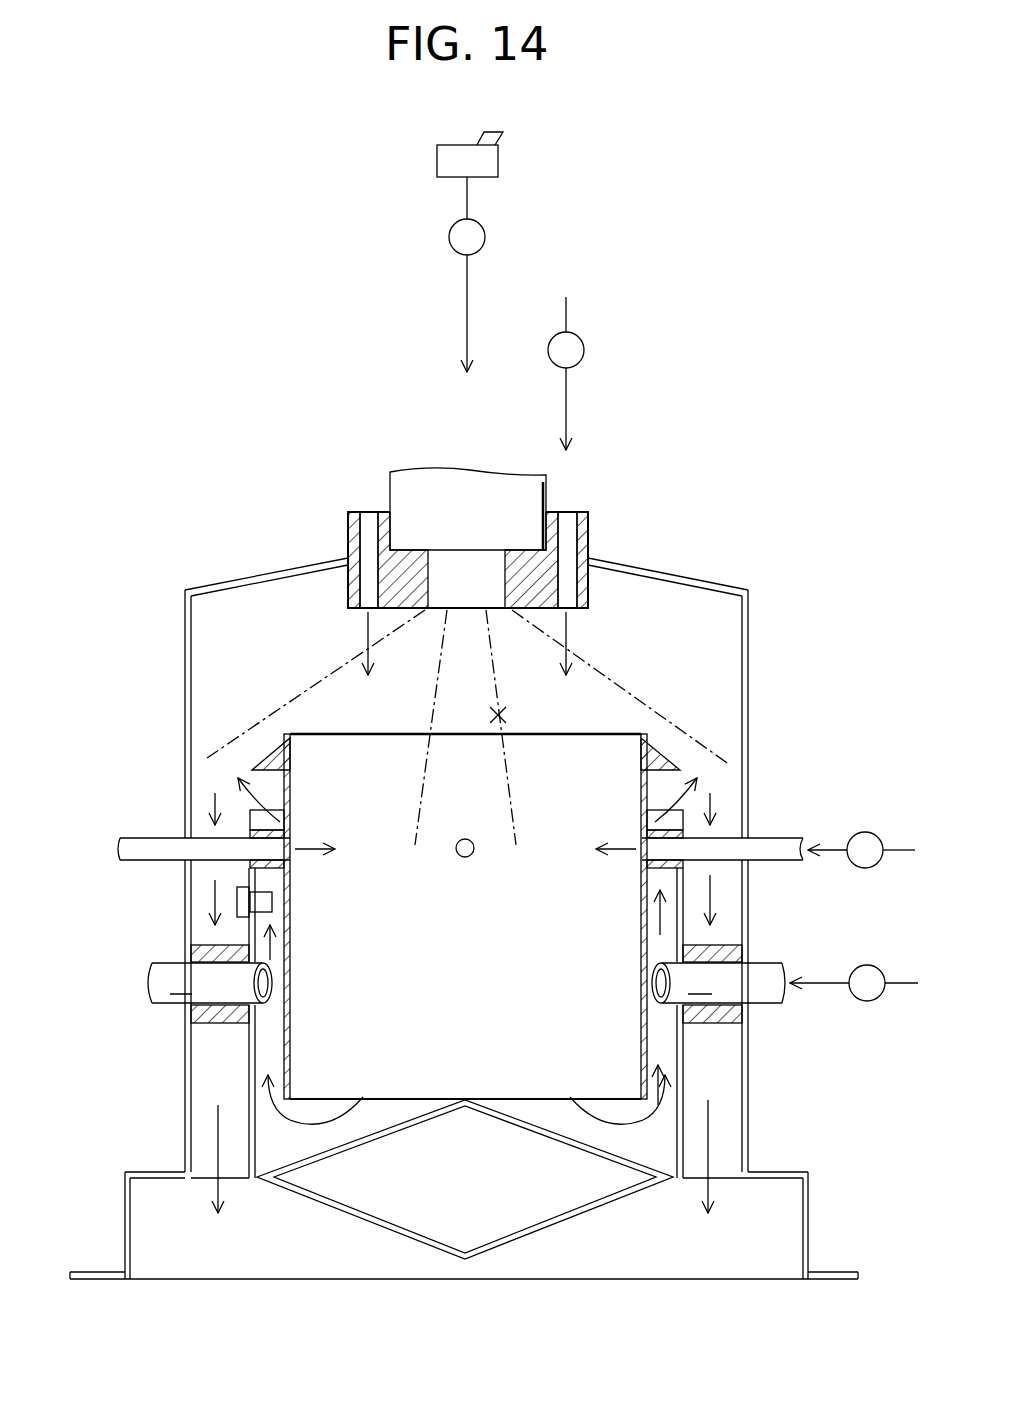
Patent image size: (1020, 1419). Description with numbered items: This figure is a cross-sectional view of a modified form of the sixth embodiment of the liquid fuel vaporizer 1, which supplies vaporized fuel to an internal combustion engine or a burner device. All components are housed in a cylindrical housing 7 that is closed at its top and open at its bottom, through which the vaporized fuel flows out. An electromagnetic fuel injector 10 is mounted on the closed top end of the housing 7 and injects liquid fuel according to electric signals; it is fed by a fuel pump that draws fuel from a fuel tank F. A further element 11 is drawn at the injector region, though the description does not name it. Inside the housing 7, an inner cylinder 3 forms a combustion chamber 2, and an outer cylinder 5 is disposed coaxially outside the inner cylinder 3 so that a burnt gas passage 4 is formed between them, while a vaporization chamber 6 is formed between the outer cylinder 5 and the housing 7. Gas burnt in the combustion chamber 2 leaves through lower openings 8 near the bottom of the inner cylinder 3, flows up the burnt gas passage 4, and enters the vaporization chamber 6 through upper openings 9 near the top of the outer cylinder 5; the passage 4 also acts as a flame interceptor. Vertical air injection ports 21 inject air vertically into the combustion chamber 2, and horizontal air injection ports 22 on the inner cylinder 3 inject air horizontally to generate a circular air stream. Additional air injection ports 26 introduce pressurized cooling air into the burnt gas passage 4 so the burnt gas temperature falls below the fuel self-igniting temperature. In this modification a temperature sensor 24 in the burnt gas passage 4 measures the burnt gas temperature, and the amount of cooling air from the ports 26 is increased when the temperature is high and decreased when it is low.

The liquid fuel vaporizer 1 is at (707, 545).
The combustion chamber 2 is at (485, 945).
The inner cylinder 3 is at (640, 946).
The burnt gas passage 4 is at (660, 1040).
The outer cylinder 5 is at (680, 1155).
The vaporization chamber 6 is at (722, 1098).
The housing 7 is at (748, 1062).
The lower openings 8 is at (310, 1112).
The upper openings 9 is at (280, 822).
The electromagnetic fuel injector 10 is at (467, 495).
The nozzle passage 11 is at (477, 600).
The vertical air injection ports 21 is at (370, 528).
The horizontal air injection ports 22 is at (215, 848).
The temperature sensor 24 is at (262, 903).
The air injection ports 26 is at (172, 975).
The fuel tank F is at (498, 160).